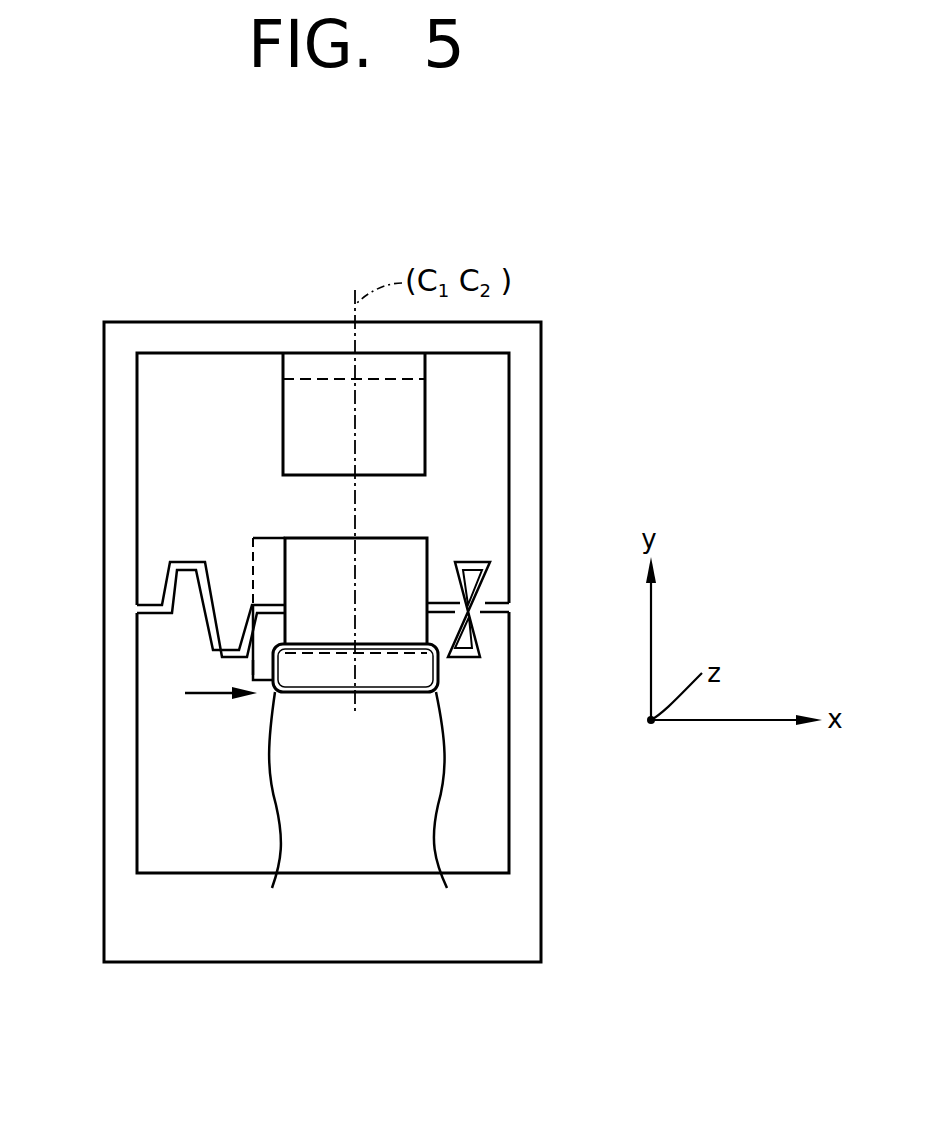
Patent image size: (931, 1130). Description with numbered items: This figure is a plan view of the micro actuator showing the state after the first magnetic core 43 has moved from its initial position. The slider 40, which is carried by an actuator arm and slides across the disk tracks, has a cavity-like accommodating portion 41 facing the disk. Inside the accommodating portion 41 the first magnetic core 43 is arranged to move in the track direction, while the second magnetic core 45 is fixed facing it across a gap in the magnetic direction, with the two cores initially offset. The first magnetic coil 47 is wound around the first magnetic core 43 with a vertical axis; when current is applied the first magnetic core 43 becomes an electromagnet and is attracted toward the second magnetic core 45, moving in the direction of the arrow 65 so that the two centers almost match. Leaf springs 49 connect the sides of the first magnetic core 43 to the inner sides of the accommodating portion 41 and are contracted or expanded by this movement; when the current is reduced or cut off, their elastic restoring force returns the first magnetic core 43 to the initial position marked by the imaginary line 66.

The slider 40 is at (545, 853).
The accommodating portion 41 is at (148, 846).
The first magnetic core 43 is at (287, 543).
The second magnetic core 45 is at (283, 418).
The first magnetic coil 47 is at (397, 690).
The leaf spring 49 is at (187, 562).
The arrow 65 is at (208, 695).
The imaginary line 66 is at (253, 668).